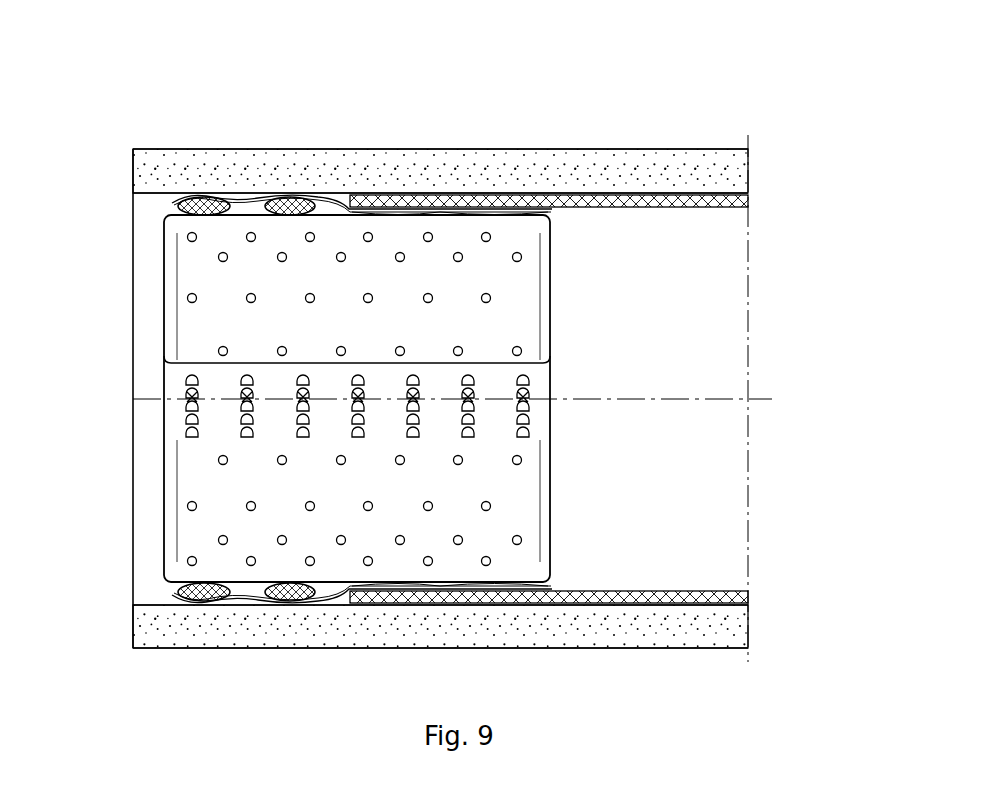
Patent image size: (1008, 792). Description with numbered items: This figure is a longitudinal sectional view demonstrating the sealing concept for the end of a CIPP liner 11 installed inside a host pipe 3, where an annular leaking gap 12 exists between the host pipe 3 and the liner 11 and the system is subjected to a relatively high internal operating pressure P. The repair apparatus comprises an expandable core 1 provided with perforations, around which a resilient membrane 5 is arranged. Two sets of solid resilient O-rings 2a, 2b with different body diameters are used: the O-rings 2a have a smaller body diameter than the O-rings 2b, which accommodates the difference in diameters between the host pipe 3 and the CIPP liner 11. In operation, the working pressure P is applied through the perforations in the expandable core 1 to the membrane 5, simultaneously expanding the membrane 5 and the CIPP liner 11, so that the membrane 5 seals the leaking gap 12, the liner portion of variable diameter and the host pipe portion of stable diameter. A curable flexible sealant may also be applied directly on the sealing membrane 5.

The expandable core 1 is at (301, 392).
The O-rings with smaller body diameter 2a is at (450, 329).
The O-rings with larger body diameter 2b is at (206, 336).
The host pipe 3 is at (452, 368).
The resilient membrane 5 is at (357, 458).
The CIPP liner 11 is at (597, 399).
The leaking gap 12 is at (489, 355).
The internal operating pressure P is at (340, 203).